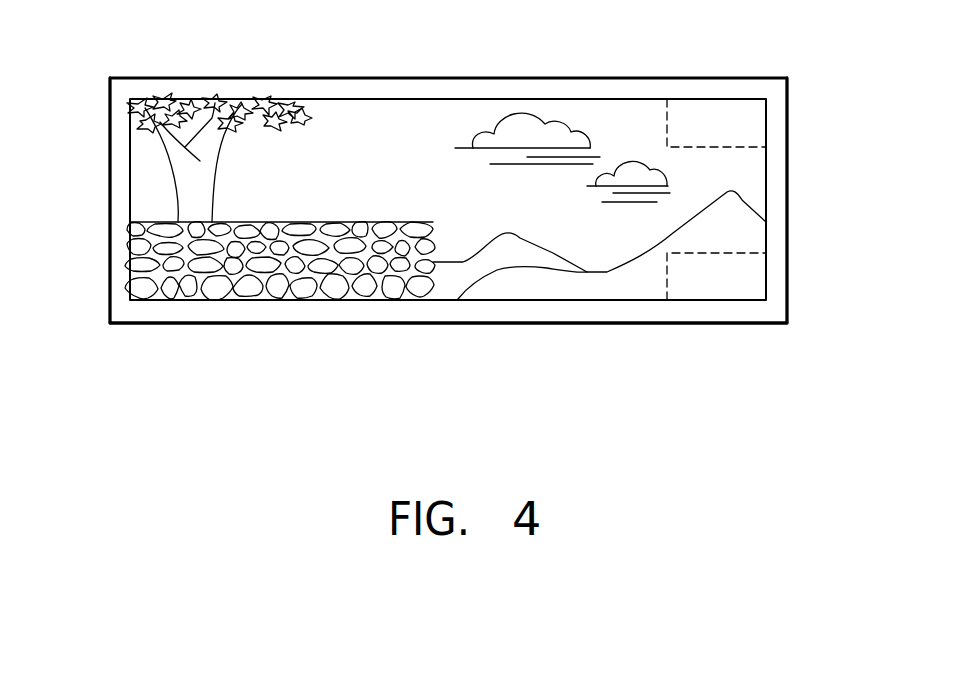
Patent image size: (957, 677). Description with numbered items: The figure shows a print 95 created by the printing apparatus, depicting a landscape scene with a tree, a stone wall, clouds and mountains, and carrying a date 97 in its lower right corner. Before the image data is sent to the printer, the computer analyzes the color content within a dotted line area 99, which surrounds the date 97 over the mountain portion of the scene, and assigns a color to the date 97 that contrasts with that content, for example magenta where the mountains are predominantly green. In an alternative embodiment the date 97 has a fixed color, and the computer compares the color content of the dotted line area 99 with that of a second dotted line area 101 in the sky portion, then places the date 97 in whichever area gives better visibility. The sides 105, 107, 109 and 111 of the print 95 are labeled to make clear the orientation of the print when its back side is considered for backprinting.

The print 95 is at (157, 312).
The date 97 is at (692, 300).
The dotted line area 99 is at (757, 249).
The dotted line area 101 is at (667, 104).
The side 105 is at (787, 137).
The side 107 is at (449, 78).
The side 109 is at (110, 200).
The side 111 is at (195, 323).